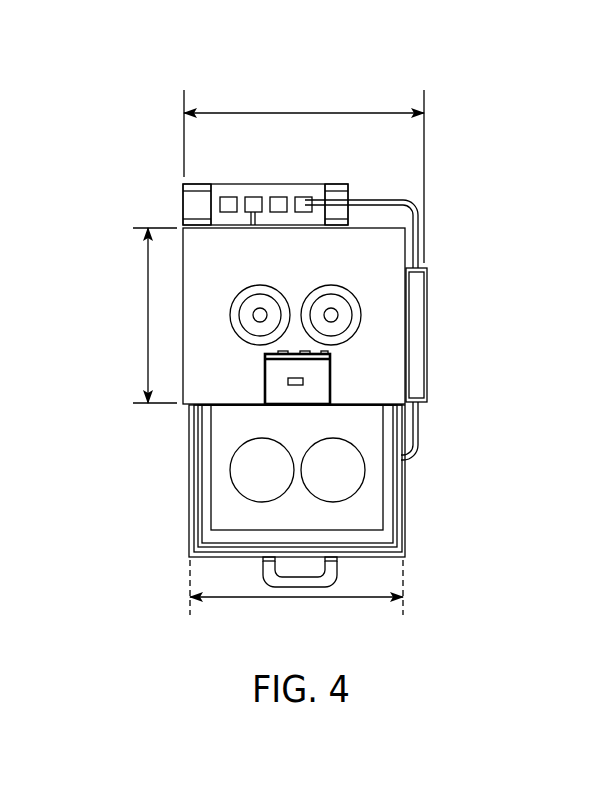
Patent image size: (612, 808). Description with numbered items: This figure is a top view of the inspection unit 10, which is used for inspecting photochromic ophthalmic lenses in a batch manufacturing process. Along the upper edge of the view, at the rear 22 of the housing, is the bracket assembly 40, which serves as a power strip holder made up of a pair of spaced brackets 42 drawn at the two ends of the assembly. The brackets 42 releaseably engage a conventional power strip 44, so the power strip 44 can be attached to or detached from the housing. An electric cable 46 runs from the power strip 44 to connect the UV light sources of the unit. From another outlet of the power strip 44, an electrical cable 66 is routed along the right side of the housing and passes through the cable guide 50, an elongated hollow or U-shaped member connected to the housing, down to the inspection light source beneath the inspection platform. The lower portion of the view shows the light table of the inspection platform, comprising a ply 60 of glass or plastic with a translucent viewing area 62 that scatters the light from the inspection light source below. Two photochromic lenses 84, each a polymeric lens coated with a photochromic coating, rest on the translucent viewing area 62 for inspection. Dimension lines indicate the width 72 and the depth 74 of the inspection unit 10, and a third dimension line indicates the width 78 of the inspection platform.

The inspection unit 10 is at (123, 86).
The bracket assembly 40 is at (136, 169).
The brackets 42 is at (197, 207).
The power strip 44 is at (264, 168).
The electric cable 46 is at (263, 210).
The rear 22 is at (388, 215).
The electrical cable 66 is at (418, 242).
The cable guide 50 is at (449, 324).
The ply 60 is at (377, 538).
The translucent viewing area 62 is at (368, 510).
The photochromic lens 84 is at (347, 473).
The width 72 is at (303, 113).
The depth 74 is at (148, 317).
The width 78 is at (295, 597).